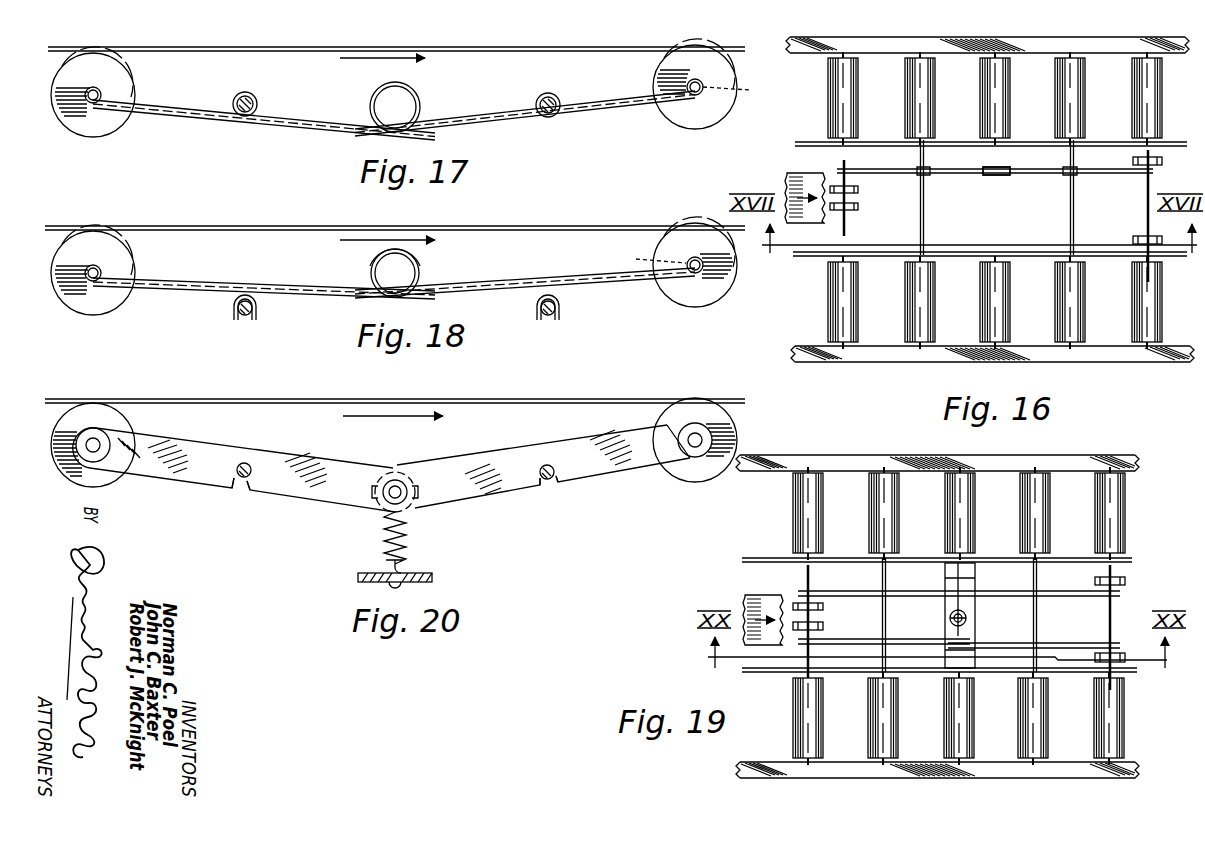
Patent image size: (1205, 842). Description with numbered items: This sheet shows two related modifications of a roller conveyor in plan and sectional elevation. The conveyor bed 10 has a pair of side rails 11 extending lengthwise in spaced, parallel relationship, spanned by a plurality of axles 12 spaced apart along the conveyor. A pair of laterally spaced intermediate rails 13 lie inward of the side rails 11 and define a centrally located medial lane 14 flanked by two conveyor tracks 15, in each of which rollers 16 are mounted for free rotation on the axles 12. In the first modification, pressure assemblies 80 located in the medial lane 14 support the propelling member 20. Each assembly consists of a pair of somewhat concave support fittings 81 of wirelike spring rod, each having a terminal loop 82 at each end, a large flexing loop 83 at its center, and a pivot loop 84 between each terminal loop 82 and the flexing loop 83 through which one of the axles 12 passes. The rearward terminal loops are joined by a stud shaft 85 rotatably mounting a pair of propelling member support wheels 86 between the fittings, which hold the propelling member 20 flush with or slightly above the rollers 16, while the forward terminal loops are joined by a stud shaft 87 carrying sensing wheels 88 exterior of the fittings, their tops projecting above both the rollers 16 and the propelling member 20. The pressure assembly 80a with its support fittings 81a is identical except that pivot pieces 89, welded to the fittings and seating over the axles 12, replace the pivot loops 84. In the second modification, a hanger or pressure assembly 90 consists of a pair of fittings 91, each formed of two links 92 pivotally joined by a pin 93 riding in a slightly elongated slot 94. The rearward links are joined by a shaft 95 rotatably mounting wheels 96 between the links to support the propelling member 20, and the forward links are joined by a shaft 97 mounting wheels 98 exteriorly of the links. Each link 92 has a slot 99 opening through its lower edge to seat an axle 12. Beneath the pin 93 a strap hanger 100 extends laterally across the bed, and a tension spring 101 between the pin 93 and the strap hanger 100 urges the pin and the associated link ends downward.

In FIG. 16, the conveyor bed 10 is at (990, 204).
In FIG. 19, the conveyor bed 10 is at (949, 614).
In FIG. 16, the side rails 11 is at (808, 38).
In FIG. 19, the side rails 11 is at (795, 455).
In FIG. 17, the axles 12 is at (240, 94).
In FIG. 18, the axles 12 is at (244, 320).
In FIG. 20, the axles 12 is at (250, 466).
In FIG. 16, the axles 12 is at (925, 196).
In FIG. 19, the axles 12 is at (887, 608).
In FIG. 16, the intermediate rails 13 is at (812, 142).
In FIG. 19, the intermediate rails 13 is at (780, 558).
In FIG. 16, the medial lane 14 is at (968, 193).
In FIG. 19, the medial lane 14 is at (910, 615).
In FIG. 16, the conveyor tracks 15 is at (961, 199).
In FIG. 19, the conveyor tracks 15 is at (912, 616).
In FIG. 16, the rollers 16 is at (933, 122).
In FIG. 19, the rollers 16 is at (855, 508).
In FIG. 17, the propelling member 20 is at (335, 47).
In FIG. 18, the propelling member 20 is at (476, 228).
In FIG. 20, the propelling member 20 is at (395, 407).
In FIG. 16, the propelling member 20 is at (786, 182).
In FIG. 19, the propelling member 20 is at (745, 600).
In FIG. 17, the pressure assemblies 80 is at (478, 136).
In FIG. 16, the pressure assemblies 80 is at (1015, 162).
In FIG. 18, the pressure assembly 80a is at (488, 305).
In FIG. 17, the support fittings 81 is at (343, 140).
In FIG. 16, the support fittings 81 is at (1012, 178).
In FIG. 18, the support fittings 81a is at (318, 302).
In FIG. 17, the terminal loop 82 is at (101, 91).
In FIG. 18, the terminal loop 82 is at (101, 270).
In FIG. 17, the flexing loop 83 is at (419, 98).
In FIG. 18, the flexing loop 83 is at (418, 270).
In FIG. 17, the pivot loop 84 is at (257, 98).
In FIG. 17, the stud shaft 85 is at (93, 87).
In FIG. 18, the stud shaft 85 is at (93, 265).
In FIG. 16, the stud shaft 85 is at (846, 168).
In FIG. 17, the propelling member support wheels 86 is at (115, 62).
In FIG. 18, the propelling member support wheels 86 is at (118, 240).
In FIG. 16, the propelling member support wheels 86 is at (858, 207).
In FIG. 17, the stud shaft 87 is at (693, 80).
In FIG. 18, the stud shaft 87 is at (697, 258).
In FIG. 16, the stud shaft 87 is at (1146, 195).
In FIG. 17, the sensing wheels 88 is at (705, 50).
In FIG. 18, the sensing wheels 88 is at (680, 232).
In FIG. 16, the sensing wheels 88 is at (1160, 163).
In FIG. 18, the pivot pieces 89 is at (232, 314).
In FIG. 20, the hanger or pressure assembly 90 is at (505, 508).
In FIG. 20, the fittings 91 is at (318, 508).
In FIG. 19, the links 92 is at (835, 592).
In FIG. 20, the pin 93 is at (396, 478).
In FIG. 19, the pin 93 is at (955, 590).
In FIG. 20, the slot 94 is at (374, 492).
In FIG. 20, the shaft 95 is at (93, 438).
In FIG. 19, the shaft 95 is at (805, 590).
In FIG. 20, the wheels 96 is at (120, 425).
In FIG. 19, the wheels 96 is at (823, 626).
In FIG. 20, the shaft 97 is at (705, 438).
In FIG. 19, the shaft 97 is at (1108, 628).
In FIG. 20, the wheels 98 is at (680, 400).
In FIG. 19, the wheels 98 is at (1125, 581).
In FIG. 20, the slot 99 is at (232, 480).
In FIG. 20, the strap hanger 100 is at (432, 578).
In FIG. 19, the strap hanger 100 is at (975, 580).
In FIG. 20, the tension spring 101 is at (412, 537).
In FIG. 19, the tension spring 101 is at (950, 620).